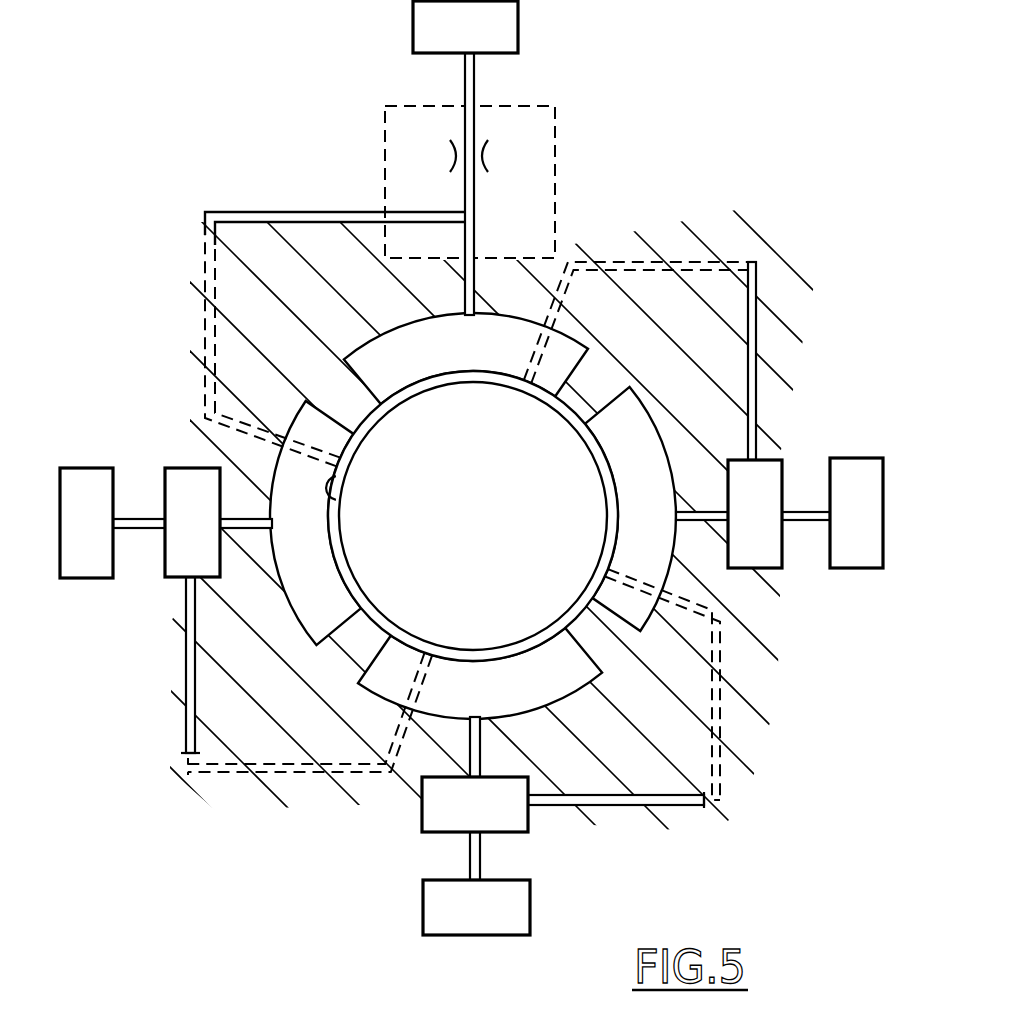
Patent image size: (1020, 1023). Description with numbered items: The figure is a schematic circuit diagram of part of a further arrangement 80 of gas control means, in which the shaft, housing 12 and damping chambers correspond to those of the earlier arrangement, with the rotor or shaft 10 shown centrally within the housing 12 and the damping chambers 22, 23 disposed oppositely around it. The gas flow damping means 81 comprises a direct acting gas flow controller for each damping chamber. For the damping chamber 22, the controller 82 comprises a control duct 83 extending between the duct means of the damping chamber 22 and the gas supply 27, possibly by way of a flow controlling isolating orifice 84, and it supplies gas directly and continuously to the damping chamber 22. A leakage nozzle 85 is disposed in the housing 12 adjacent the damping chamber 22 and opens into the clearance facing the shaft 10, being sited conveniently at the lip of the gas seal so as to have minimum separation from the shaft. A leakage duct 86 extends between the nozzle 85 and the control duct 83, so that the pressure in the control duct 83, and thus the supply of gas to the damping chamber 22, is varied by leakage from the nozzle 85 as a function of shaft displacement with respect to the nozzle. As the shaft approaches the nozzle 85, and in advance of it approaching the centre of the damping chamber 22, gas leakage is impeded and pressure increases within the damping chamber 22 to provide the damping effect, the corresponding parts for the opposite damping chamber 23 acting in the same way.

The rotor 10 is at (522, 458).
The housing 12 is at (318, 730).
The damping chamber 22 is at (475, 358).
The lower pole piece 23 is at (494, 705).
The gas supply 27 is at (512, 30).
The arrangement 80 is at (471, 468).
The gas flow damping means 81 is at (182, 231).
The controller 82 is at (383, 166).
The control duct 83 is at (477, 187).
The flow controlling isolating orifice 84 is at (483, 168).
The leakage nozzle 85 is at (338, 503).
The leakage duct 86 is at (203, 315).